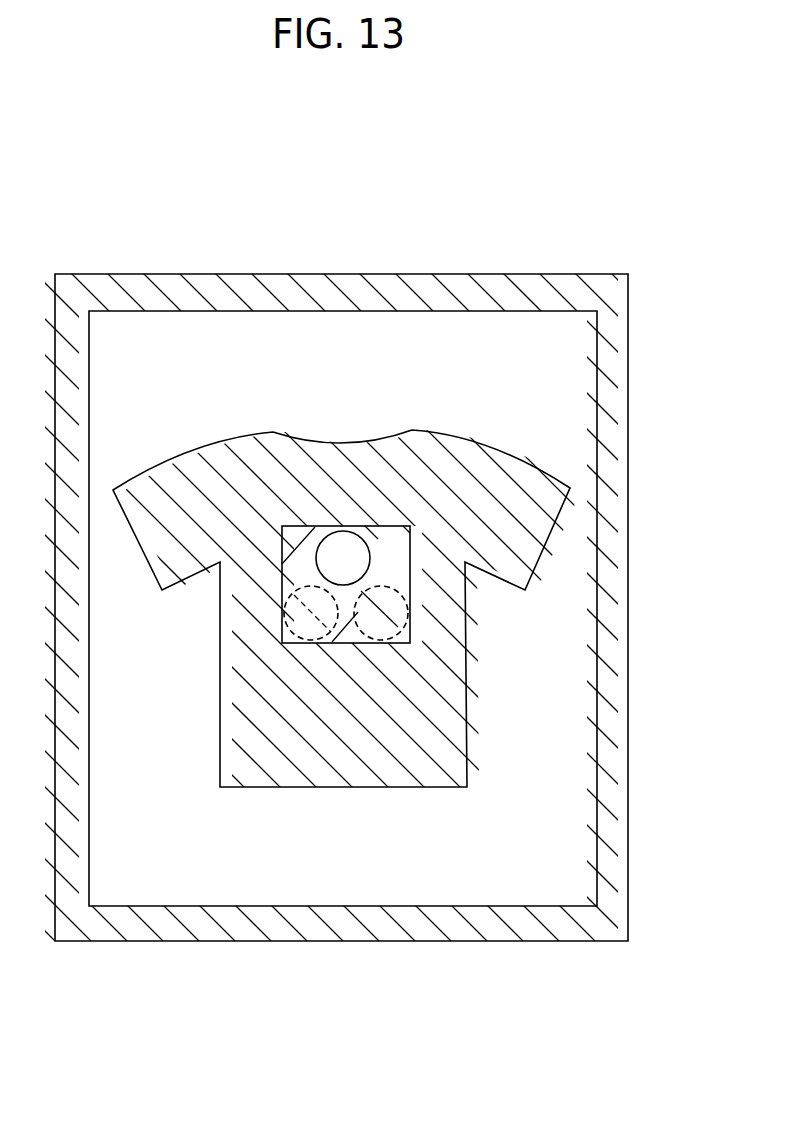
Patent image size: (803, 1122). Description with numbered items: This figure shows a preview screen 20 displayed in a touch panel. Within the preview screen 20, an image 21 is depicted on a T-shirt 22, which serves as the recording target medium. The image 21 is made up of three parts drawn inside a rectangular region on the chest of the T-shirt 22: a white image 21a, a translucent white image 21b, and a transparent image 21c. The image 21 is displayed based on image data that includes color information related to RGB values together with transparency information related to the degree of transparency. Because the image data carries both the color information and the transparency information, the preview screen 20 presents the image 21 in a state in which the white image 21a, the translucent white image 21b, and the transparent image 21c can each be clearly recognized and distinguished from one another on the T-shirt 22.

The preview screen 20 is at (594, 205).
The image 21 is at (282, 564).
The white image 21a is at (342, 527).
The translucent white image 21b is at (303, 587).
The transparent image 21c is at (392, 588).
The T-shirt 22 is at (529, 476).